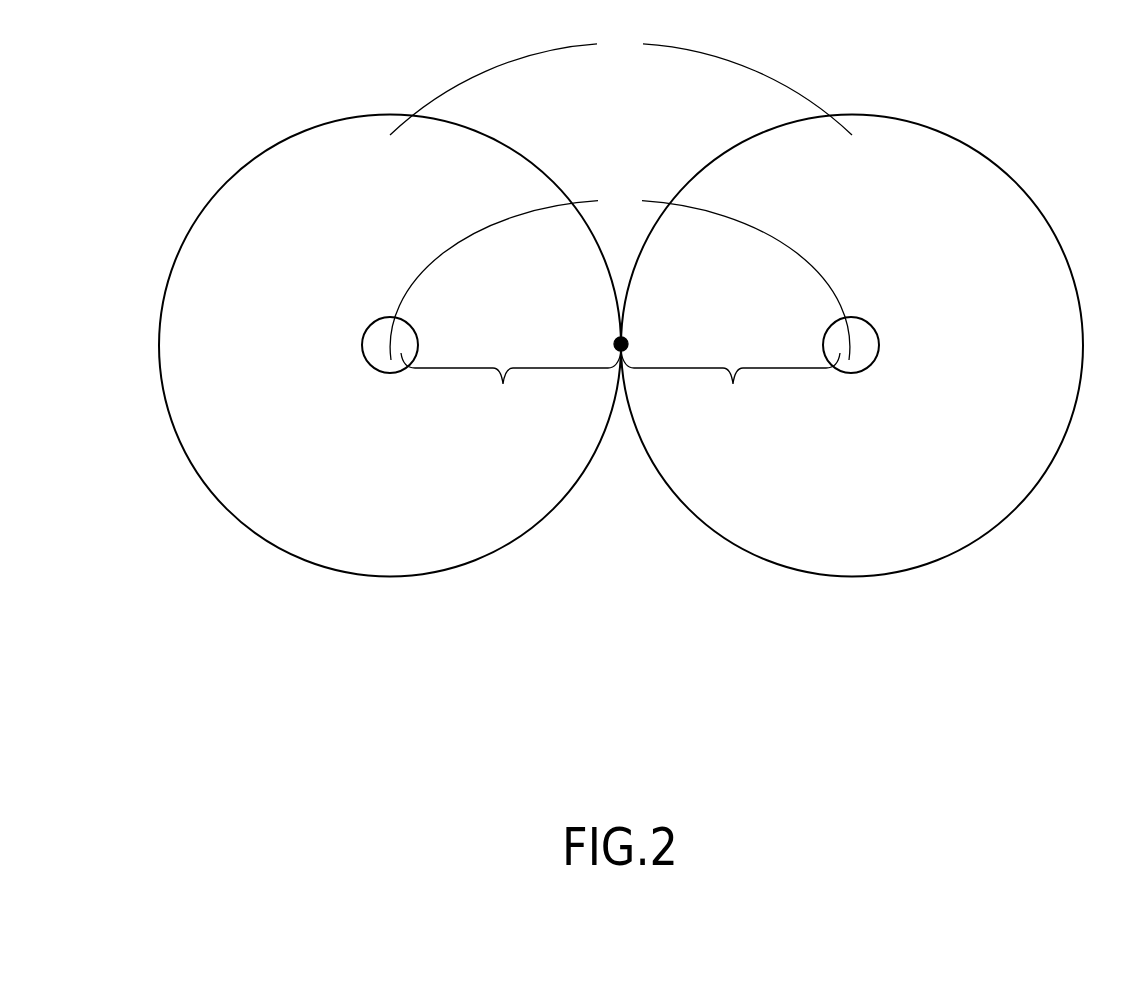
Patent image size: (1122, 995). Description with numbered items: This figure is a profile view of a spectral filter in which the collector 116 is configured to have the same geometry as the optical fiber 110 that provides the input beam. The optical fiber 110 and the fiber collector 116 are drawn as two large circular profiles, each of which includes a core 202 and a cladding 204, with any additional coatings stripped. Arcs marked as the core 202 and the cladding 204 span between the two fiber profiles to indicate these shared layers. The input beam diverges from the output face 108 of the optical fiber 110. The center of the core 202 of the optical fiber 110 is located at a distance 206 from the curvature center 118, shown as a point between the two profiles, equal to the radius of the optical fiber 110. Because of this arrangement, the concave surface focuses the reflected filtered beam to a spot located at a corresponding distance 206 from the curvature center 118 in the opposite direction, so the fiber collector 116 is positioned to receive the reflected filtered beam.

The output face 108 is at (343, 136).
The optical fiber 110 is at (384, 326).
The collector 116 is at (1003, 171).
The curvature center 118 is at (621, 352).
The core 202 is at (620, 273).
The cladding 204 is at (621, 83).
The distance 206 is at (620, 384).